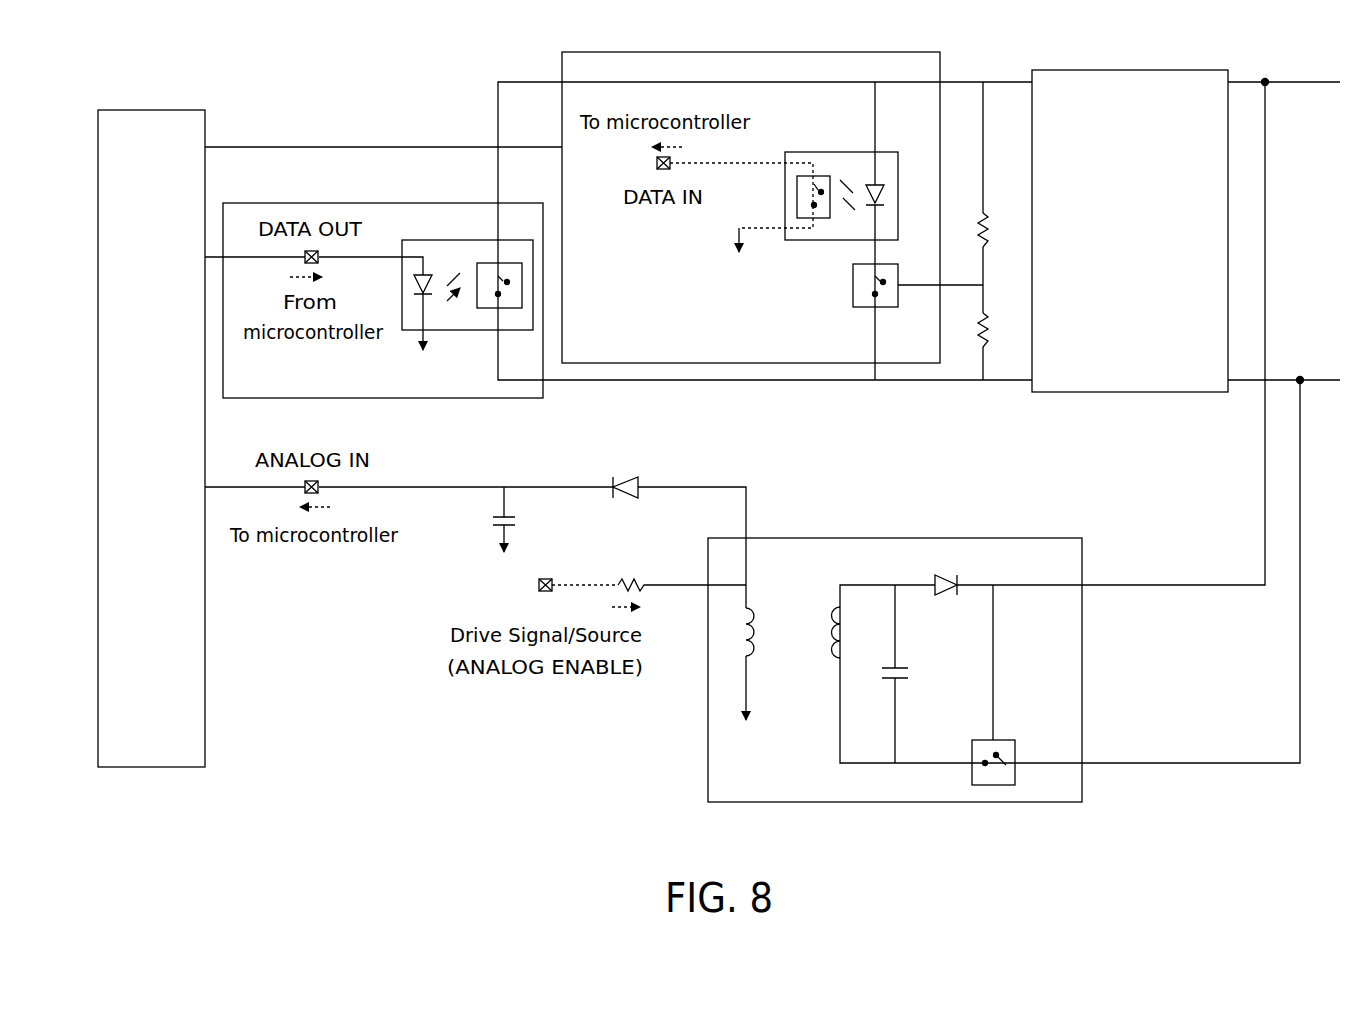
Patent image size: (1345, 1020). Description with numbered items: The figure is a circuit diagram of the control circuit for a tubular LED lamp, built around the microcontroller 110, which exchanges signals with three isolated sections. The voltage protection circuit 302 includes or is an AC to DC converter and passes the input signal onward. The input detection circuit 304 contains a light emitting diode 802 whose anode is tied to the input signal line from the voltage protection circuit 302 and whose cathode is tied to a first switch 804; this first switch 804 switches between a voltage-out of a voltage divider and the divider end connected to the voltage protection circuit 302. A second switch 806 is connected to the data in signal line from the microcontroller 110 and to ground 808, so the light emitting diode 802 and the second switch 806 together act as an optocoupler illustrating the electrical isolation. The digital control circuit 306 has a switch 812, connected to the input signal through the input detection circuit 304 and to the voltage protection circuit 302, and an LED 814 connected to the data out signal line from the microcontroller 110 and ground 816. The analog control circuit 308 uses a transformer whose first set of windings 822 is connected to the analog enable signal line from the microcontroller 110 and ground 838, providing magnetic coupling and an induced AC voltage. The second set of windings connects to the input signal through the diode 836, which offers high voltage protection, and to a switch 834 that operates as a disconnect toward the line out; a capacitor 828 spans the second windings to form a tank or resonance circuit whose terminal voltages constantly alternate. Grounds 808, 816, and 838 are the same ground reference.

The microcontroller 110 is at (173, 452).
The voltage protection circuit 302 is at (1130, 70).
The input detection circuit 304 is at (753, 52).
The digital control circuit 306 is at (405, 203).
The analog control circuit 308 is at (1065, 538).
The light emitting diode 802 is at (857, 190).
The first switch 804 is at (850, 285).
The second switch 806 is at (808, 215).
The ground 808 is at (735, 240).
The switch 812 is at (490, 310).
The LED 814 is at (403, 283).
The ground 816 is at (410, 340).
The first set of windings 822 is at (757, 628).
The capacitor 828 is at (885, 690).
The switch 834 is at (1027, 775).
The diode 836 is at (950, 570).
The ground 838 is at (748, 695).